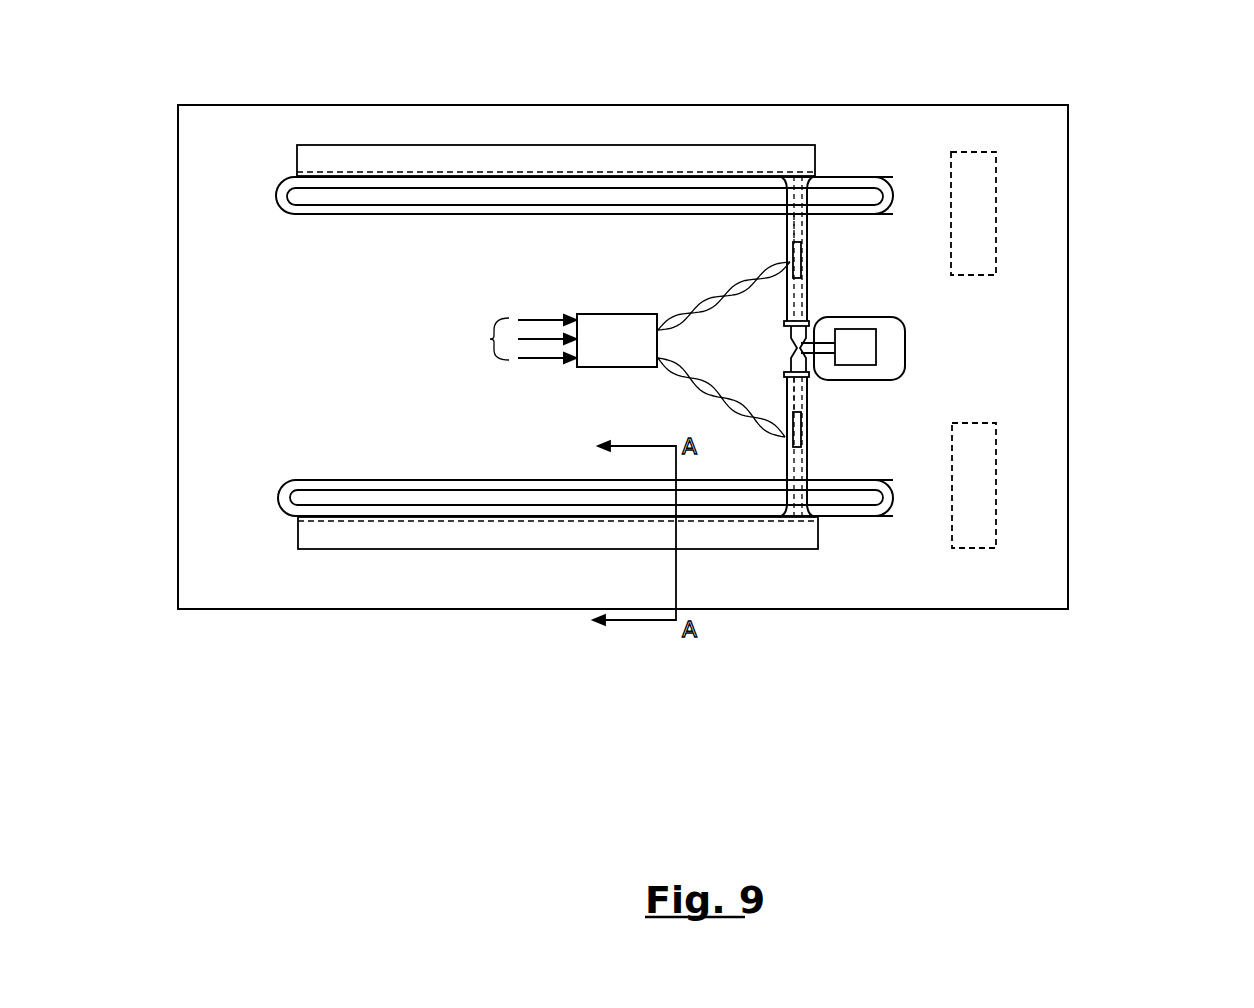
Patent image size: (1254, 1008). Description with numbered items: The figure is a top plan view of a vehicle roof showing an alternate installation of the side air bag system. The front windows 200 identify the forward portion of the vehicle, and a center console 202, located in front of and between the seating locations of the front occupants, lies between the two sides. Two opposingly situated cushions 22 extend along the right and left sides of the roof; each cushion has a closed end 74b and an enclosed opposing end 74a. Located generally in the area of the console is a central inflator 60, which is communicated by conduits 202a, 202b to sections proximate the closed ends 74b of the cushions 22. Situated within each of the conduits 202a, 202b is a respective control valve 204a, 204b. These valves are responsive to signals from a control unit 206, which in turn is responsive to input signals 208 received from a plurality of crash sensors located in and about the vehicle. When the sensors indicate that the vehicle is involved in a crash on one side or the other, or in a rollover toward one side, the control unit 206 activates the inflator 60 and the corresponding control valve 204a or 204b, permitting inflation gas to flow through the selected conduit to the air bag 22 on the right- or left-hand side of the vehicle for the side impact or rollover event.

The cushion 22 is at (513, 155).
The opposing end 74a is at (313, 152).
The closed end 74b is at (782, 155).
The central inflator 60 is at (857, 347).
The front windows 200 is at (975, 196).
The center console 202 is at (893, 370).
The conduit 202a is at (794, 224).
The conduit 202b is at (798, 398).
The control valve 204a is at (797, 255).
The control valve 204b is at (800, 430).
The control unit 206 is at (603, 328).
The input signals 208 is at (511, 339).